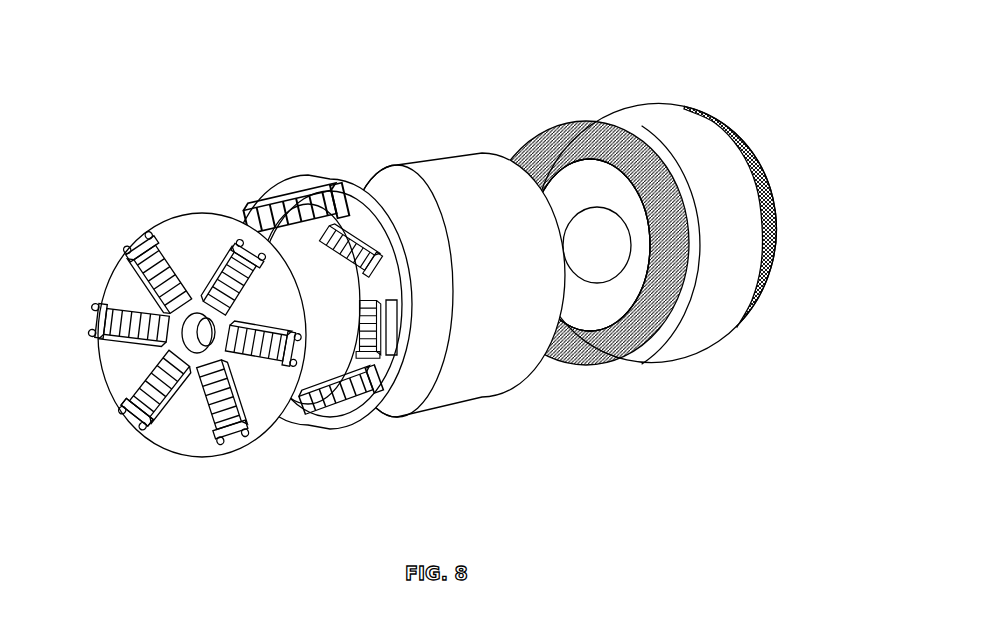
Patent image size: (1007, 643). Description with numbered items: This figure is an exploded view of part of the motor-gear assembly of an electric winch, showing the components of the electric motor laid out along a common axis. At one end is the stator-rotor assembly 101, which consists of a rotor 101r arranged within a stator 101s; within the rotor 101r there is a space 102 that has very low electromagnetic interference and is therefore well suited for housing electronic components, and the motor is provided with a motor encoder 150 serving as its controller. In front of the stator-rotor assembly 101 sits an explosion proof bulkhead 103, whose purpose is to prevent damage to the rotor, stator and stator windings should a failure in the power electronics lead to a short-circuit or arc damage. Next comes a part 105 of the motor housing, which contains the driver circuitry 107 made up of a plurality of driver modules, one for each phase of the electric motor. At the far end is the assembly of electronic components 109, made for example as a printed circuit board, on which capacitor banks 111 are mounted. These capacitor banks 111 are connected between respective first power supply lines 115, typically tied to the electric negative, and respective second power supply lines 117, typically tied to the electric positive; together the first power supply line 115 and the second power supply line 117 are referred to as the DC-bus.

The stator-rotor assembly 101 is at (702, 105).
The rotor 101r is at (560, 200).
The stator 101s is at (690, 335).
The space 102 is at (600, 244).
The motor encoder 150 is at (600, 244).
The explosion proof bulkhead 103 is at (457, 203).
The part of the motor housing 105 is at (357, 200).
The driver circuitry 107 is at (333, 368).
The assembly of electronic components 109 is at (198, 237).
The capacitor banks 111 is at (153, 273).
The first power supply line 115 is at (180, 348).
The second power supply line 117 is at (177, 413).